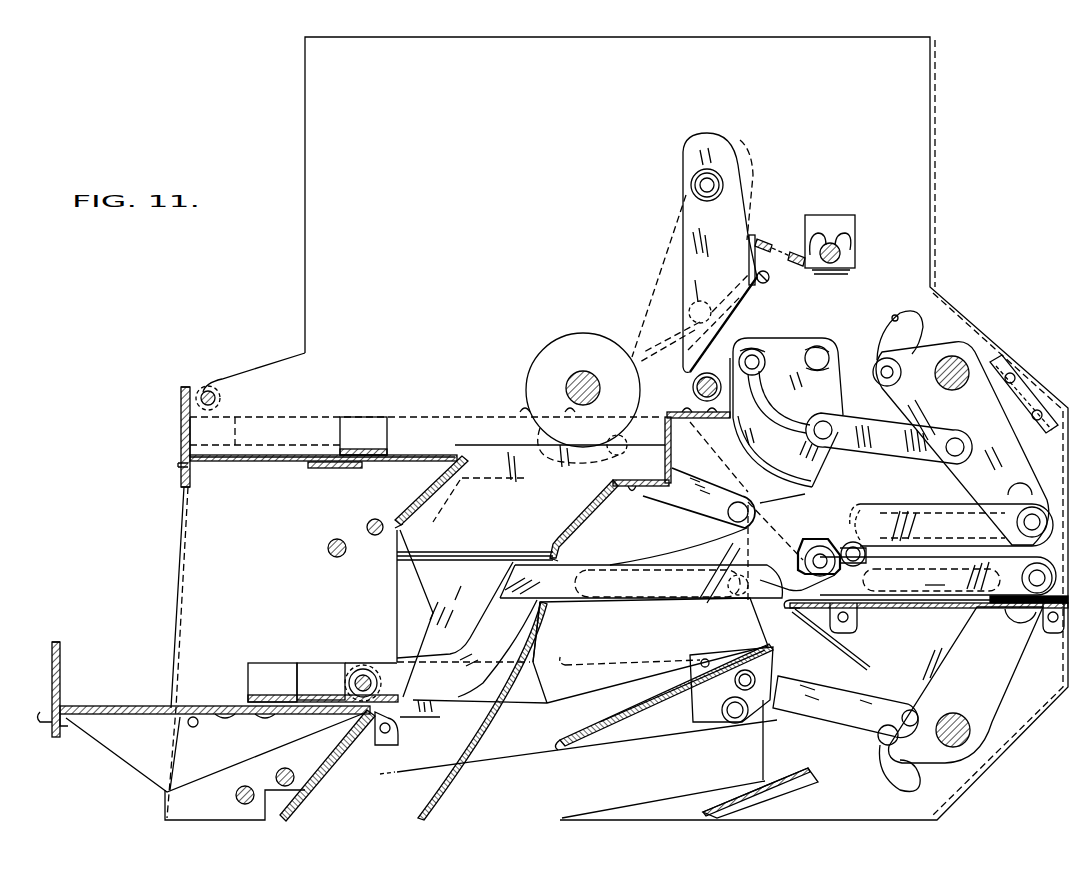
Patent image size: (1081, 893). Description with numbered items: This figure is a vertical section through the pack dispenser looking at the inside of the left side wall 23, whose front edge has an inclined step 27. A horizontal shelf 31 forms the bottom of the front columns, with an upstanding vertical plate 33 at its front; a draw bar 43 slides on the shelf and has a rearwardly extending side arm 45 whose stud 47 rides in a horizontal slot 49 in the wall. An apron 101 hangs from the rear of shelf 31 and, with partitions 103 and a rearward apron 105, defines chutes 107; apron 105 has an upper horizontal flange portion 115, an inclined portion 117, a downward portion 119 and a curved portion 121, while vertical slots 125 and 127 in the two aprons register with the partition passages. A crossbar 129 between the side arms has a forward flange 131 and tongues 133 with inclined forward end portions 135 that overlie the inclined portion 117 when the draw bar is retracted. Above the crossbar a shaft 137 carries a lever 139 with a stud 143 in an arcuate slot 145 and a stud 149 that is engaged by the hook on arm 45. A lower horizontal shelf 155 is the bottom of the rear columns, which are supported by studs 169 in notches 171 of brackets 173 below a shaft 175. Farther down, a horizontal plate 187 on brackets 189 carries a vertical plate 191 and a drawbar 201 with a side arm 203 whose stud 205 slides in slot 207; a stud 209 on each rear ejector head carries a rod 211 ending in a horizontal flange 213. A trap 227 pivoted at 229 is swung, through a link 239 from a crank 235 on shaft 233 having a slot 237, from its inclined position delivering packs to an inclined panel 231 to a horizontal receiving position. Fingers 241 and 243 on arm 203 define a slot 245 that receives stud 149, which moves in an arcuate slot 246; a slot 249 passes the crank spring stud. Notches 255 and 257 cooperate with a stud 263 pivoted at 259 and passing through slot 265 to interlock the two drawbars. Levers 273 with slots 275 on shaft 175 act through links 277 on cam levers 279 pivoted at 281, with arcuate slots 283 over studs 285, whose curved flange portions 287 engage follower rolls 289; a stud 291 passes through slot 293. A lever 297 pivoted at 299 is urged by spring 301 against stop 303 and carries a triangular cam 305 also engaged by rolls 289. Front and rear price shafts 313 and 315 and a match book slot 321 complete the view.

The left side wall 23 is at (325, 185).
The inclined step 27 is at (262, 371).
The horizontal shelf 31 is at (217, 462).
The upstanding vertical plate 33 is at (180, 418).
The draw bar 43 is at (223, 452).
The side arm 45 is at (446, 419).
The stud 47 is at (1024, 523).
The horizontal slot 49 is at (928, 510).
The apron 101 is at (422, 495).
The partition 103 is at (388, 617).
The rearward apron 105 is at (549, 552).
The chute 107 is at (506, 556).
The upper horizontal flange portion 115 is at (646, 492).
The inclined portion 117 is at (584, 521).
The downward portion 119 is at (538, 629).
The curved portion 121 is at (441, 787).
The vertical slot 125 is at (415, 577).
The vertical slot 127 is at (558, 558).
The horizontal crossbar 129 is at (668, 412).
The forward flange 131 is at (665, 433).
The tongue 133 is at (641, 480).
The forward end portion 135 is at (582, 507).
The horizontal shaft 137 is at (584, 374).
The lever 139 is at (680, 503).
The stud 143 is at (607, 439).
The arcuate slot 145 is at (564, 464).
The stud 149 is at (728, 511).
The horizontal shelf 155 is at (868, 601).
The stud 169 is at (842, 255).
The notch 171 is at (832, 246).
The bracket 173 is at (851, 240).
The horizontal shaft 175 is at (958, 382).
The horizontal plate 187 is at (149, 705).
The bracket 189 is at (127, 748).
The upstanding vertical plate 191 is at (54, 641).
The drawbar 201 is at (262, 697).
The side arm 203 is at (322, 663).
The stud 205 is at (1020, 580).
The horizontal slot 207 is at (938, 559).
The stud 209 is at (364, 669).
The rod 211 is at (508, 595).
The horizontal flange 213 is at (948, 594).
The trap 227 is at (586, 663).
The pivot 229 is at (729, 723).
The inclined panel 231 is at (783, 773).
The horizontal shaft 233 is at (957, 720).
The crank 235 is at (1002, 673).
The slot 237 is at (1022, 612).
The link 239 is at (847, 708).
The forward finger 241 is at (663, 593).
The rearward finger 243 is at (798, 504).
The slot 245 is at (722, 541).
The arcuate slot 246 is at (668, 554).
The arcuate slot 249 is at (898, 781).
The bottom notch 255 is at (816, 538).
The notch 257 is at (773, 575).
The pivot 259 is at (866, 553).
The stud 263 is at (846, 545).
The slot 265 is at (855, 514).
The lever 273 is at (1011, 440).
The slot 275 is at (1015, 499).
The link 277 is at (875, 450).
The lever 279 is at (831, 400).
The pivot 281 is at (823, 352).
The arcuate slot 283 is at (770, 389).
The stud 285 is at (764, 362).
The curved flange portion 287 is at (757, 471).
The follower roll 289 is at (689, 311).
The stud 291 is at (900, 370).
The slot 293 is at (903, 313).
The lever 297 is at (740, 172).
The pivot 299 is at (707, 198).
The spring 301 is at (800, 265).
The stop 303 is at (763, 284).
The inclined triangular cam 305 is at (728, 319).
The front price shaft 313 is at (330, 550).
The rear price shaft 315 is at (369, 518).
The slot 321 is at (506, 757).